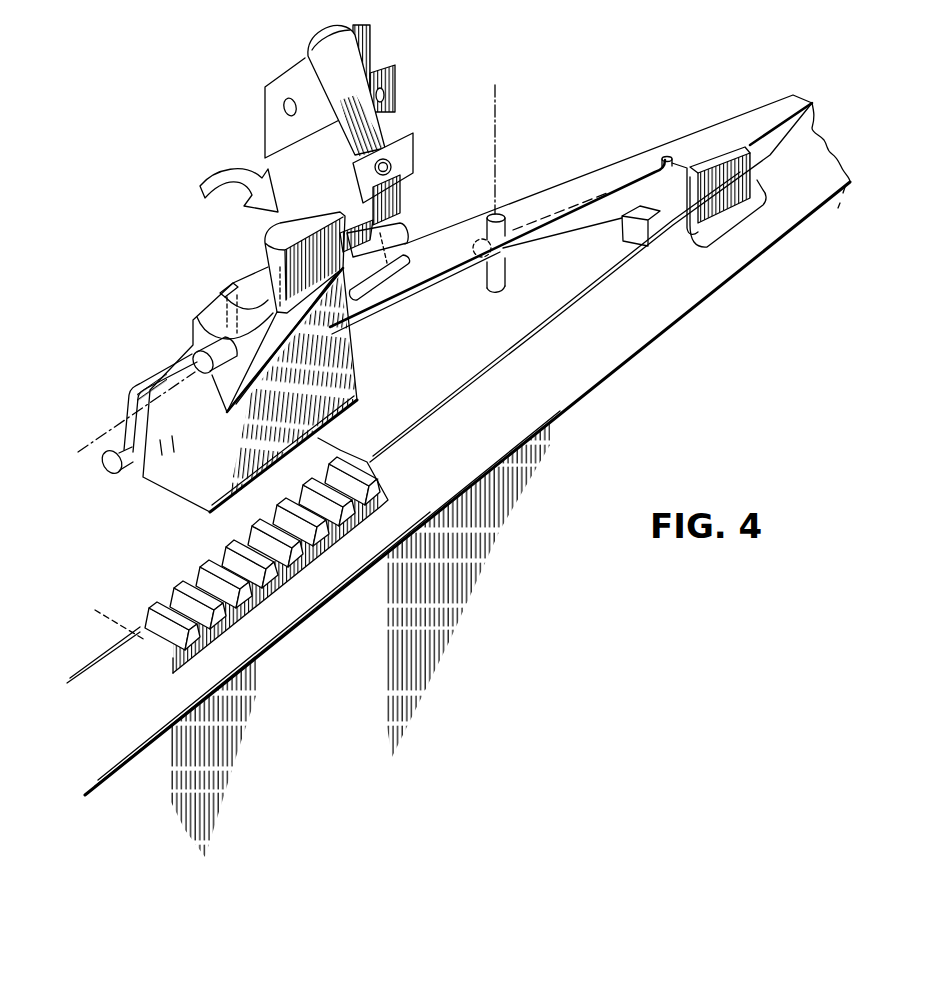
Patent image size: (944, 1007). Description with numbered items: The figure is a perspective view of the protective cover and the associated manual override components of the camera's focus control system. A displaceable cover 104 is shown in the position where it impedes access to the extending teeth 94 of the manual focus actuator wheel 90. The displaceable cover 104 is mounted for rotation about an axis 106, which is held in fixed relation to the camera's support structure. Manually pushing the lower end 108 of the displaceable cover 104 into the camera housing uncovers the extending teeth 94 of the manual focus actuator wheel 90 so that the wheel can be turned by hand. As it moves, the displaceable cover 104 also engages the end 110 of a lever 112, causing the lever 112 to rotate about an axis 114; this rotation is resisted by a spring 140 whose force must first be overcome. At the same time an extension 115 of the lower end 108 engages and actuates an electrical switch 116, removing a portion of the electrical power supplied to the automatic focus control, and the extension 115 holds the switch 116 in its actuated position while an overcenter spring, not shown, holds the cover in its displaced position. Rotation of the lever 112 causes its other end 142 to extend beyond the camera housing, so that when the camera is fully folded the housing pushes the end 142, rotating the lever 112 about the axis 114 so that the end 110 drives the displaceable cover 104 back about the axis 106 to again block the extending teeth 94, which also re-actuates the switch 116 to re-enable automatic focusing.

The manual focus actuator wheel 90 is at (267, 623).
The extending teeth 94 is at (307, 530).
The displaceable cover 104 is at (348, 420).
The axis 106 is at (103, 427).
The lower end 108 is at (313, 393).
The end 110 is at (226, 277).
The lever 112 is at (540, 193).
The axis 114 is at (497, 115).
The extension 115 is at (412, 247).
The electrical switch 116 is at (357, 77).
The spring 140 is at (593, 232).
The end 142 is at (747, 135).